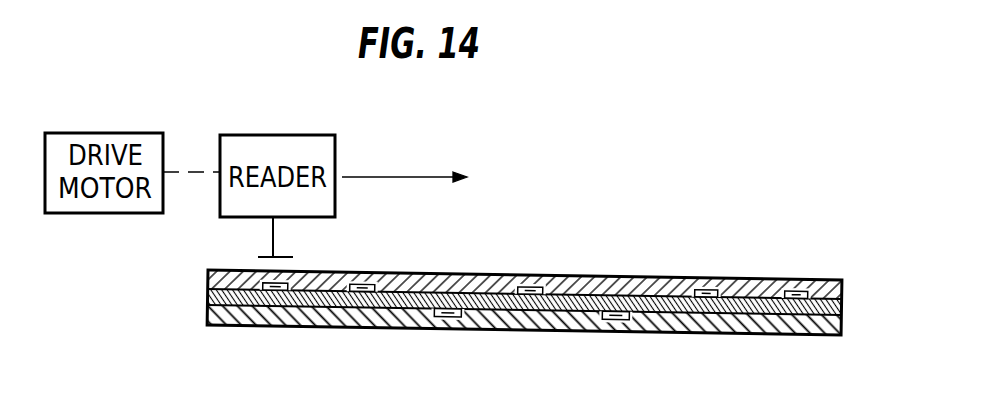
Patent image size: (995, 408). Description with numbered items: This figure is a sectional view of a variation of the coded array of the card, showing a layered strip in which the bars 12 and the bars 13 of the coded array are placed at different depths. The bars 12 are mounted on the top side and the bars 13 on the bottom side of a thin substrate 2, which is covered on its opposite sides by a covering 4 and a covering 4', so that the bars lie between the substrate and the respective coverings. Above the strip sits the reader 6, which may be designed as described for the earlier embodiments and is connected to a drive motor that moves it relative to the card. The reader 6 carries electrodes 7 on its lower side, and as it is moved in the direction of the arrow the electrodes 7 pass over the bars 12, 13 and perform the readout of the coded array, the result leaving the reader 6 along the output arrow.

The substrate 2 is at (750, 311).
The covering 4 is at (525, 266).
The covering 4' is at (524, 344).
The reader 6 is at (337, 156).
The electrodes 7 is at (268, 256).
The bars 12 is at (287, 281).
The bars 13 is at (450, 331).